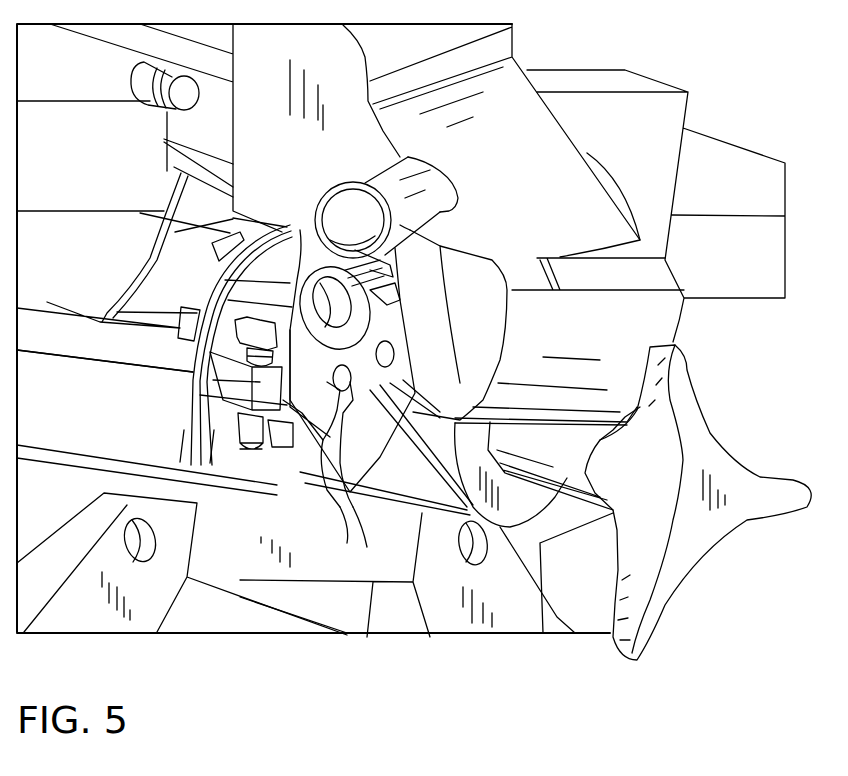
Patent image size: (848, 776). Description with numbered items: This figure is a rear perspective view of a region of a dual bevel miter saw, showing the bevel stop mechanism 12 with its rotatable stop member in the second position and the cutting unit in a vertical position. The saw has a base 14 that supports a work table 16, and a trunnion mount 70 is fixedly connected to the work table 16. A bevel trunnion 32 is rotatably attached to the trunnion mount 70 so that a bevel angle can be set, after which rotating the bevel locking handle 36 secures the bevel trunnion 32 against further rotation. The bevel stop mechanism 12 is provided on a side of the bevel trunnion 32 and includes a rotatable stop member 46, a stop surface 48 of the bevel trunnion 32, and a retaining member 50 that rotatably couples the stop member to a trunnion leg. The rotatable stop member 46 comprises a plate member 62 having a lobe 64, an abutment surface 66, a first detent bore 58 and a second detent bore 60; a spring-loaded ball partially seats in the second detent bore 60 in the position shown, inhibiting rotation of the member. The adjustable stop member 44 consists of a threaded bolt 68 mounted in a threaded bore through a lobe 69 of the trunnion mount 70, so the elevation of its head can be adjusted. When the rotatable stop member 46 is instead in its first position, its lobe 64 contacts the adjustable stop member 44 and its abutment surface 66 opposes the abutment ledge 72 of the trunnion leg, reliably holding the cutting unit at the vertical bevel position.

The bevel stop mechanism 12 is at (296, 456).
The base 14 is at (95, 617).
The work table 16 is at (65, 422).
The bevel trunnion 32 is at (530, 507).
The bevel locking handle 36 is at (693, 537).
The adjustable stop member 44 is at (196, 424).
The rotatable stop member 46 is at (416, 355).
The stop surface 48 is at (393, 280).
The retaining member 50 is at (418, 323).
The first detent bore 58 is at (373, 463).
The second detent bore 60 is at (378, 492).
The plate member 62 is at (320, 480).
The lobe 64 is at (347, 543).
The abutment surface 66 is at (305, 231).
The threaded bolt 68 is at (233, 317).
The lobe 69 is at (232, 392).
The trunnion mount 70 is at (260, 382).
The abutment ledge 72 is at (387, 299).